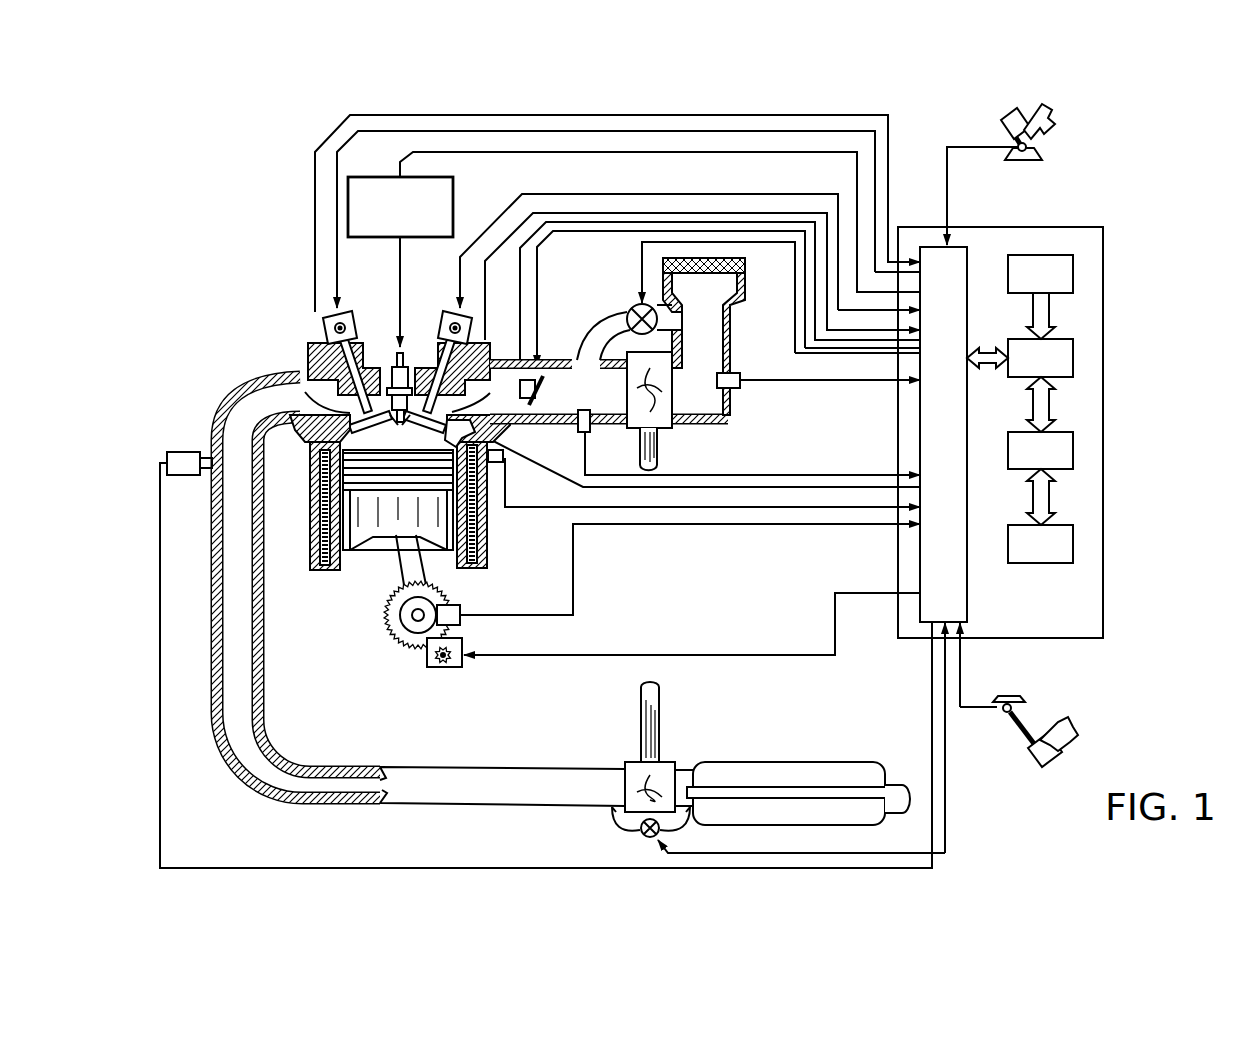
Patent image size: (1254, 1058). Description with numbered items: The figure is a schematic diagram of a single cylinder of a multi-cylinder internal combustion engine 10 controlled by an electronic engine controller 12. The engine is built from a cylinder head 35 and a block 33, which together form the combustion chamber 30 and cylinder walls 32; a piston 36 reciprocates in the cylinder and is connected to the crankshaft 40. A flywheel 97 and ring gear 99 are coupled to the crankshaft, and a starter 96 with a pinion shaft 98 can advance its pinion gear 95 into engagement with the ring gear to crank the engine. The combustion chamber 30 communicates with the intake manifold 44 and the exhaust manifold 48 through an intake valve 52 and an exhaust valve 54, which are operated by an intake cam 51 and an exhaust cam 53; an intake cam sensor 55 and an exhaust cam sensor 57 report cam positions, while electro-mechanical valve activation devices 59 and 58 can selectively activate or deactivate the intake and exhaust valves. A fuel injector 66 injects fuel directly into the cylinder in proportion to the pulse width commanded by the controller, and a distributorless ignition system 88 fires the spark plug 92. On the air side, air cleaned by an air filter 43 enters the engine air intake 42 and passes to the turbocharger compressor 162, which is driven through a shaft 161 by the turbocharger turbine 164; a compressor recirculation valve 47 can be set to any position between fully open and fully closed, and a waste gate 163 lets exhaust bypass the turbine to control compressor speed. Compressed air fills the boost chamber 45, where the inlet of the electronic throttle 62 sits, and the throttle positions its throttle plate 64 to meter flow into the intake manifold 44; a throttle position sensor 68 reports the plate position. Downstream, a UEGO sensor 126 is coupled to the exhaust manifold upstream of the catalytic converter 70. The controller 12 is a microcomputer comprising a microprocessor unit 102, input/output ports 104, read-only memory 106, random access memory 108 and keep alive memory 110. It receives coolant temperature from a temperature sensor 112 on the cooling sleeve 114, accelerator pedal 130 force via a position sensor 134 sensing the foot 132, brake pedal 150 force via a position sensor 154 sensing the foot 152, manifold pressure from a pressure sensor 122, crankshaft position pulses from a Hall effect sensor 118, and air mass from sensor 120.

The internal combustion engine 10 is at (250, 297).
The electronic engine controller 12 is at (1093, 227).
The combustion chamber 30 is at (397, 437).
The cylinder walls 32 is at (350, 562).
The block 33 is at (306, 470).
The cylinder head 35 is at (306, 345).
The piston 36 is at (383, 523).
The crankshaft 40 is at (403, 642).
The engine air intake 42 is at (588, 272).
The air filter 43 is at (720, 272).
The intake manifold 44 is at (518, 403).
The boost chamber 45 is at (604, 403).
The compressor recirculation valve 47 is at (633, 305).
The exhaust manifold 48 is at (292, 412).
The intake cam 51 is at (449, 312).
The intake valve 52 is at (440, 402).
The exhaust cam 53 is at (334, 323).
The exhaust valve 54 is at (305, 387).
The intake cam sensor 55 is at (471, 330).
The exhaust cam sensor 57 is at (328, 322).
The valve activation device 58 is at (350, 330).
The valve activation device 59 is at (450, 330).
The electronic throttle 62 is at (542, 387).
The throttle plate 64 is at (537, 400).
The fuel injector 66 is at (497, 448).
The throttle position sensor 68 is at (507, 366).
The catalytic converter 70 is at (730, 762).
The distributorless ignition system 88 is at (365, 177).
The spark plug 92 is at (402, 345).
The pinion gear 95 is at (452, 668).
The starter 96 is at (460, 667).
The flywheel 97 is at (398, 612).
The pinion shaft 98 is at (442, 667).
The ring gear 99 is at (417, 650).
The microprocessor unit 102 is at (1073, 355).
The input/output ports 104 is at (966, 255).
The read-only memory 106 is at (1073, 272).
The random access memory 108 is at (1073, 450).
The keep alive memory 110 is at (1073, 543).
The temperature sensor 112 is at (497, 465).
The cooling sleeve 114 is at (480, 515).
The Hall effect sensor 118 is at (460, 605).
The air mass sensor 120 is at (740, 373).
The pressure sensor 122 is at (578, 432).
The Universal Exhaust Gas Oxygen sensor 126 is at (167, 456).
The accelerator pedal 130 is at (1008, 126).
The foot 132 is at (1050, 113).
The position sensor 134 is at (1035, 148).
The brake pedal 150 is at (1025, 752).
The foot 152 is at (1062, 721).
The position sensor 154 is at (997, 706).
The shaft 161 is at (640, 443).
The turbocharger compressor 162 is at (660, 413).
The waste gate 163 is at (641, 834).
The turbocharger turbine 164 is at (635, 762).